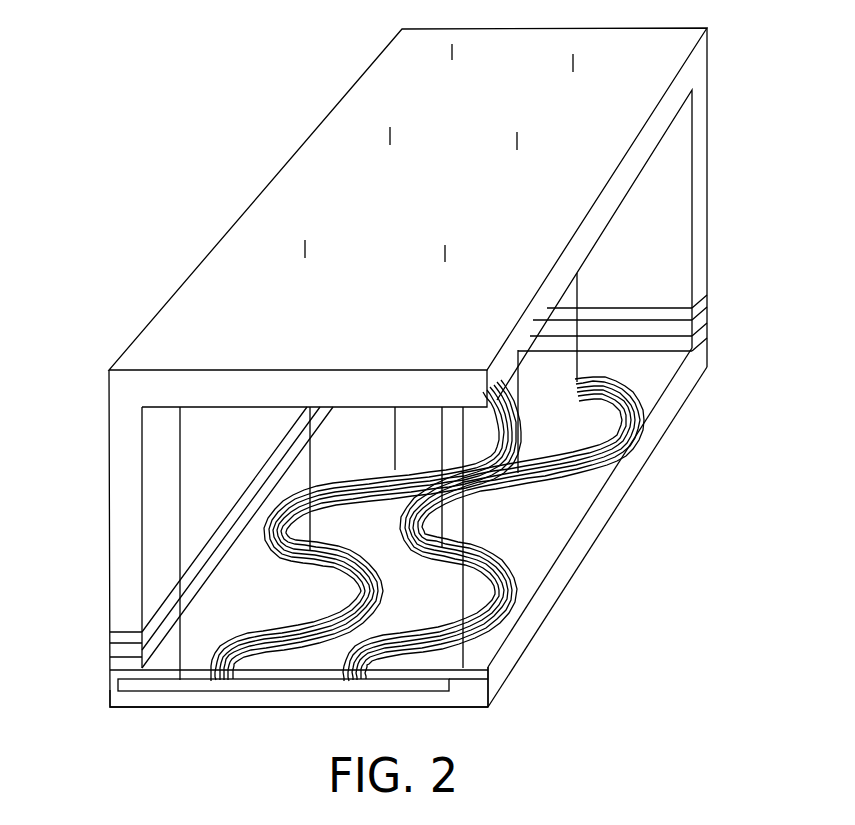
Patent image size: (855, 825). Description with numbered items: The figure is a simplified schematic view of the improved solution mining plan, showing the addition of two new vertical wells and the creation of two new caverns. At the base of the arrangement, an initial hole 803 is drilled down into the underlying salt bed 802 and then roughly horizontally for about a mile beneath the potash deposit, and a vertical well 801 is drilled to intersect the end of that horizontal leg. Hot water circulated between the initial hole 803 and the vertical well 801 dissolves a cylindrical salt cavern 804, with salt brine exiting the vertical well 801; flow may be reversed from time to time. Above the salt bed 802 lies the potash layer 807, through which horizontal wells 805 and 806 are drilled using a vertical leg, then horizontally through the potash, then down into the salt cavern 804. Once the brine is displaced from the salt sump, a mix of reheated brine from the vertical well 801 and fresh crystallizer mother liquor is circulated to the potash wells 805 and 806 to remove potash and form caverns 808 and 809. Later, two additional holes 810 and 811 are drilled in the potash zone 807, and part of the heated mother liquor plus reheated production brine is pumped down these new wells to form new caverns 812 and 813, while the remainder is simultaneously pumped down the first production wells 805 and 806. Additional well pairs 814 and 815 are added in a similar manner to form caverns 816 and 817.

The vertical well 801 is at (173, 437).
The salt bed 802 is at (105, 703).
The initial hole 803 is at (474, 676).
The salt cavern 804 is at (282, 694).
The horizontal well 805 is at (299, 248).
The horizontal well 806 is at (452, 252).
The potash layer 807 is at (105, 663).
The cavern 808 is at (337, 604).
The cavern 809 is at (512, 594).
The additional hole 810 is at (384, 135).
The additional hole 811 is at (524, 140).
The new cavern 812 is at (268, 530).
The new cavern 813 is at (511, 529).
The additional well pair 814 is at (445, 50).
The additional well pair 815 is at (580, 62).
The cavern 816 is at (564, 529).
The cavern 817 is at (541, 529).